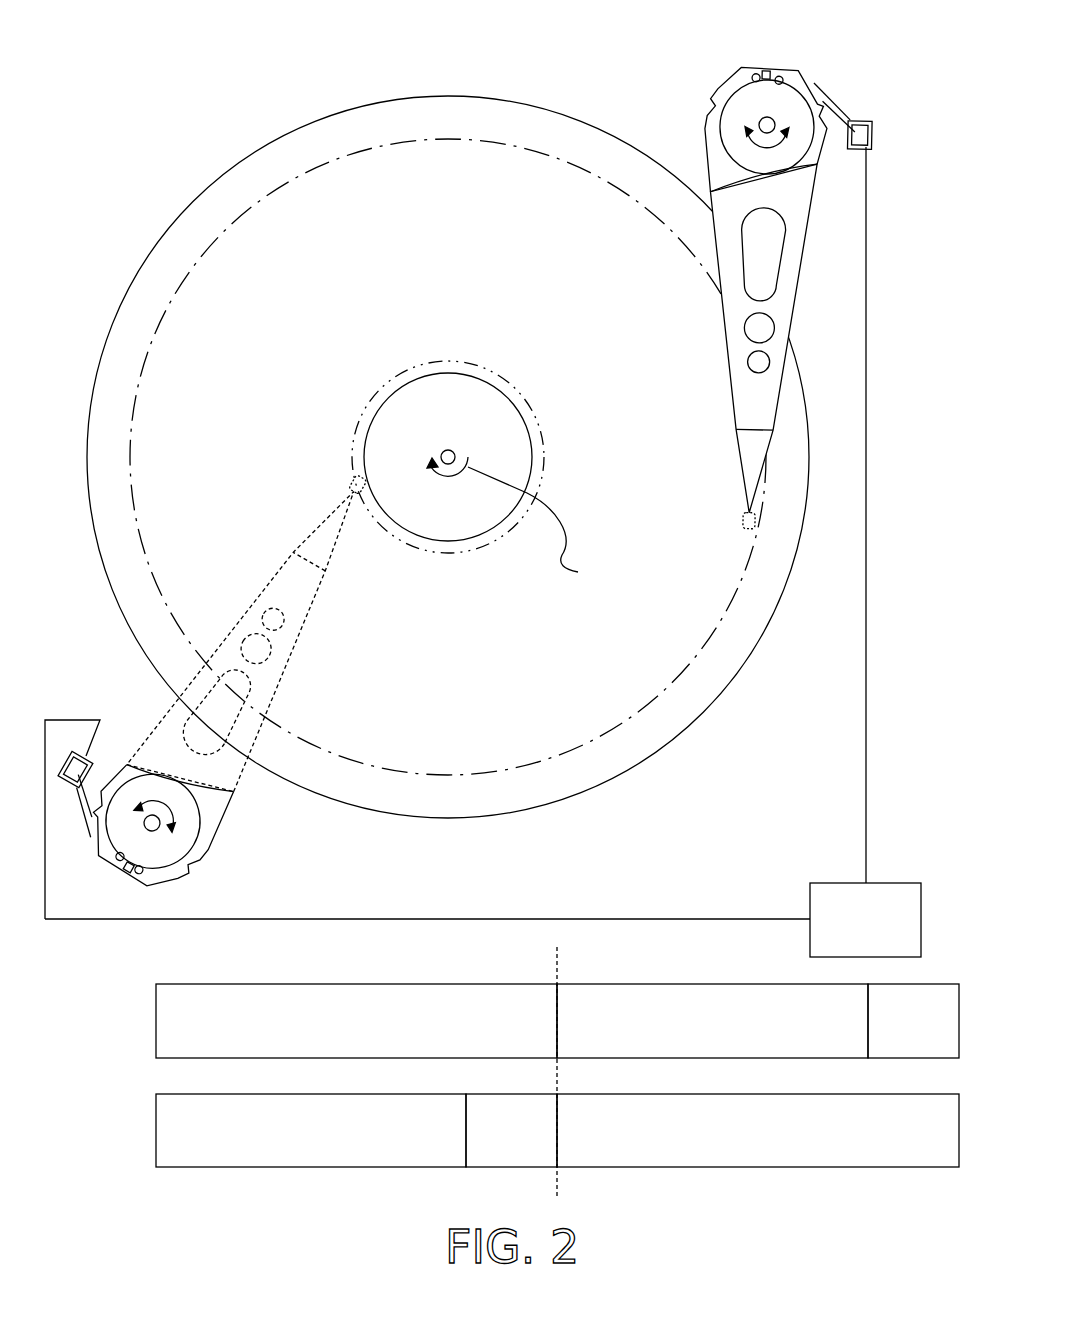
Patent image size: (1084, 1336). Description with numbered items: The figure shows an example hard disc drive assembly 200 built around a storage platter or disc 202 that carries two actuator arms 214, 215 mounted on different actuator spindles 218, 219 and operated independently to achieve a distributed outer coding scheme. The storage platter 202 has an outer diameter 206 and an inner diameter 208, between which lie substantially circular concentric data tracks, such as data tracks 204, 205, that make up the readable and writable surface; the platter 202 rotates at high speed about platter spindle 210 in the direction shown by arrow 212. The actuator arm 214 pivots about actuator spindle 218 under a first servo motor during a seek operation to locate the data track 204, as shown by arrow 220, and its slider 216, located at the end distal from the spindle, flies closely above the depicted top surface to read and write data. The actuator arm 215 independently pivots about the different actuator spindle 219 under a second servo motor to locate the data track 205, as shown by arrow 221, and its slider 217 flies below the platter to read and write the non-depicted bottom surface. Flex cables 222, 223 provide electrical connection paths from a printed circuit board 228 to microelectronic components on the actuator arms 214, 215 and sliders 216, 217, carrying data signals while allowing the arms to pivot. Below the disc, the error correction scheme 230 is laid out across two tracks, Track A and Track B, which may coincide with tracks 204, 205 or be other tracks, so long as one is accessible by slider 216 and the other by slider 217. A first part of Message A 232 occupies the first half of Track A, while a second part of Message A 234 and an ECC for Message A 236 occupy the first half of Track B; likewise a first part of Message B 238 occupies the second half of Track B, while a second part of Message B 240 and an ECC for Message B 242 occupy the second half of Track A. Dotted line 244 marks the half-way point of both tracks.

The hard disc drive assembly 200 is at (200, 82).
The storage platter 202 is at (475, 701).
The data track 204 is at (658, 686).
The data track 205 is at (353, 433).
The outer diameter 206 is at (385, 97).
The inner diameter 208 is at (442, 373).
The platter spindle 210 is at (441, 450).
The arrow 212 is at (550, 527).
The actuator arm 214 is at (810, 209).
The actuator arm 215 is at (183, 764).
The slider 216 is at (752, 512).
The slider 217 is at (348, 483).
The actuator spindle 218 is at (762, 120).
The actuator spindle 219 is at (205, 852).
The arrow 220 is at (813, 82).
The arrow 221 is at (160, 825).
The flex cable 222 is at (866, 478).
The flex cable 223 is at (483, 918).
The printed circuit board 228 is at (845, 947).
The error correction scheme 230 is at (505, 1025).
The first part of Message A 232 is at (336, 1047).
The second part of Message A 234 is at (291, 1157).
The ECC for Message A 236 is at (491, 1157).
The first part of Message B 238 is at (738, 1157).
The second part of Message B 240 is at (692, 1047).
The ECC for Message B 242 is at (893, 1047).
The dotted line 244 is at (558, 973).